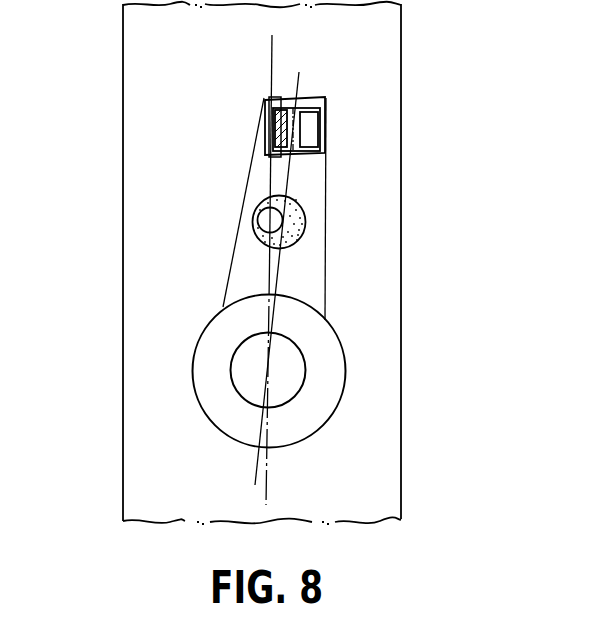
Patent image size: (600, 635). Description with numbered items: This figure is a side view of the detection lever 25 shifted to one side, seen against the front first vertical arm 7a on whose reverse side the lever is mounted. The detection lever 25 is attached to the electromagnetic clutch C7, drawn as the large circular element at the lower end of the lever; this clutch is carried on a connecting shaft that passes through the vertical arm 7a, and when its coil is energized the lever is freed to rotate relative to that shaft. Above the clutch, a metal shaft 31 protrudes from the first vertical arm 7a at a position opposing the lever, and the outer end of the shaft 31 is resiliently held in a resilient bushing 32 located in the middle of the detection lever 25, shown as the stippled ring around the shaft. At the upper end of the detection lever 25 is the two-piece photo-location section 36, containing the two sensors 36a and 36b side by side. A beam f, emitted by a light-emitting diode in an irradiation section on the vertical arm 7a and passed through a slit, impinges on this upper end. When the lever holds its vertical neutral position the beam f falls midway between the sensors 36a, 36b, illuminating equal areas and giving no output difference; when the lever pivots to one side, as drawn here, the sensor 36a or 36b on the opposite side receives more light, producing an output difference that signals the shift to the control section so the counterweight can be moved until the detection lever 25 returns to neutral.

The front first vertical arm 7a is at (130, 82).
The detection lever 25 is at (336, 147).
The photo-location section 36 is at (316, 160).
The sensor 36a is at (283, 100).
The sensor 36b is at (318, 98).
The beam f is at (264, 117).
The shaft 31 is at (257, 220).
The resilient bushing 32 is at (305, 228).
The electromagnetic clutch C7 is at (335, 412).